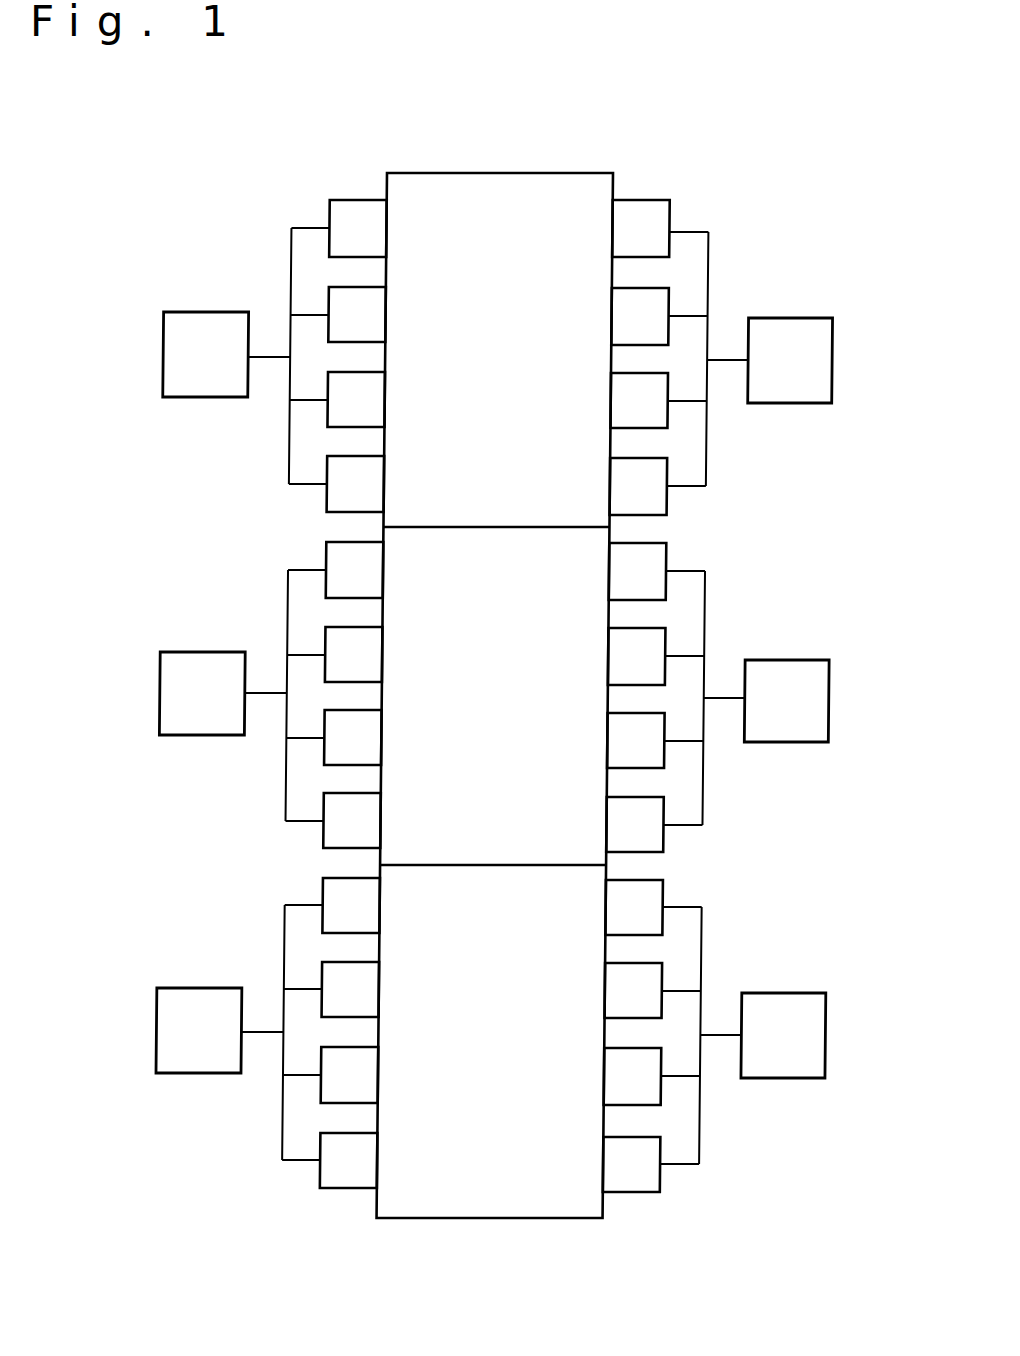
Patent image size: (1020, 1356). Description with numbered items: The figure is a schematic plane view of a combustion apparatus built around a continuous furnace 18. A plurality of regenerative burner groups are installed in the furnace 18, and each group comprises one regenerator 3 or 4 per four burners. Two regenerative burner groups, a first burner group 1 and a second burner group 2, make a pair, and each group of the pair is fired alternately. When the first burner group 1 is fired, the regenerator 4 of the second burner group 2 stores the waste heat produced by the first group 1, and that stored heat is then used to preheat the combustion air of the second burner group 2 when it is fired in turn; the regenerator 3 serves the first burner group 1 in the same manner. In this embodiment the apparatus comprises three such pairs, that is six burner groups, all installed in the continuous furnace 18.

The continuous furnace 18 is at (505, 193).
The first burner group 1 is at (629, 234).
The second burner group 2 is at (364, 232).
The regenerator 3 is at (819, 358).
The regenerator 4 is at (181, 350).